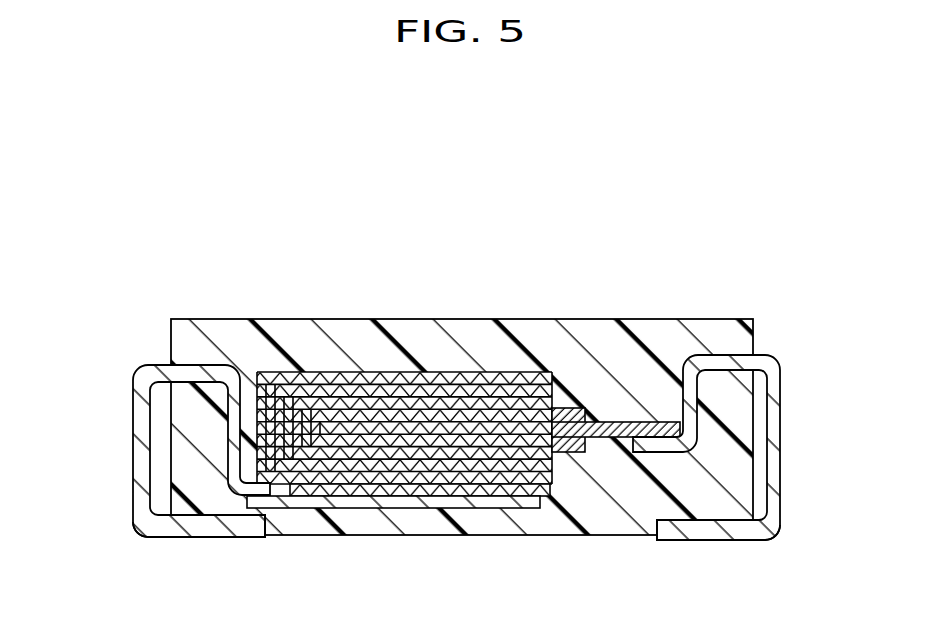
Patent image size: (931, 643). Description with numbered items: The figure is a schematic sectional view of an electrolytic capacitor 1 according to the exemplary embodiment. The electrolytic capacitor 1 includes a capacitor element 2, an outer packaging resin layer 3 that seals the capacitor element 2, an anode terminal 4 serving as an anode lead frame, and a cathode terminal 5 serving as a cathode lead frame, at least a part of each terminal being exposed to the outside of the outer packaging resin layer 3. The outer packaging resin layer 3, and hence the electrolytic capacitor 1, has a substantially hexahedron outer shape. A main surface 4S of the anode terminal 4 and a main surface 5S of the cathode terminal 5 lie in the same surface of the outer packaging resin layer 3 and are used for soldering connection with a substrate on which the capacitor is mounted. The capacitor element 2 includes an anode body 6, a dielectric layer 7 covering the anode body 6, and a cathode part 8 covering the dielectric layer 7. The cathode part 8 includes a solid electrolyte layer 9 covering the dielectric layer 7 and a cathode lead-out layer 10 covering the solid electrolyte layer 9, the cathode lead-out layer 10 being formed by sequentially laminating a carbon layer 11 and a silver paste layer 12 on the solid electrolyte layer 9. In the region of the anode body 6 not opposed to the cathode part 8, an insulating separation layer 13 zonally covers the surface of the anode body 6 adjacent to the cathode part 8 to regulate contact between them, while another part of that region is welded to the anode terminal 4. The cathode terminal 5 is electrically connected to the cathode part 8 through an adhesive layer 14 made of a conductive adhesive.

The electrolytic capacitor 1 is at (434, 378).
The capacitor element 2 is at (404, 322).
The outer packaging resin layer 3 is at (213, 335).
The anode terminal 4 is at (714, 443).
The main surface of anode terminal 4S is at (708, 542).
The cathode terminal 5 is at (172, 486).
The main surface of cathode terminal 5S is at (208, 538).
The anode body 6 is at (490, 417).
The dielectric layer 7 is at (443, 418).
The cathode part 8 is at (331, 337).
The solid electrolyte layer 9 is at (376, 410).
The cathode lead-out layer 10 is at (296, 358).
The carbon layer 11 is at (290, 377).
The silver paste layer 12 is at (332, 382).
The insulating separation layer 13 is at (562, 405).
The adhesive layer 14 is at (382, 508).